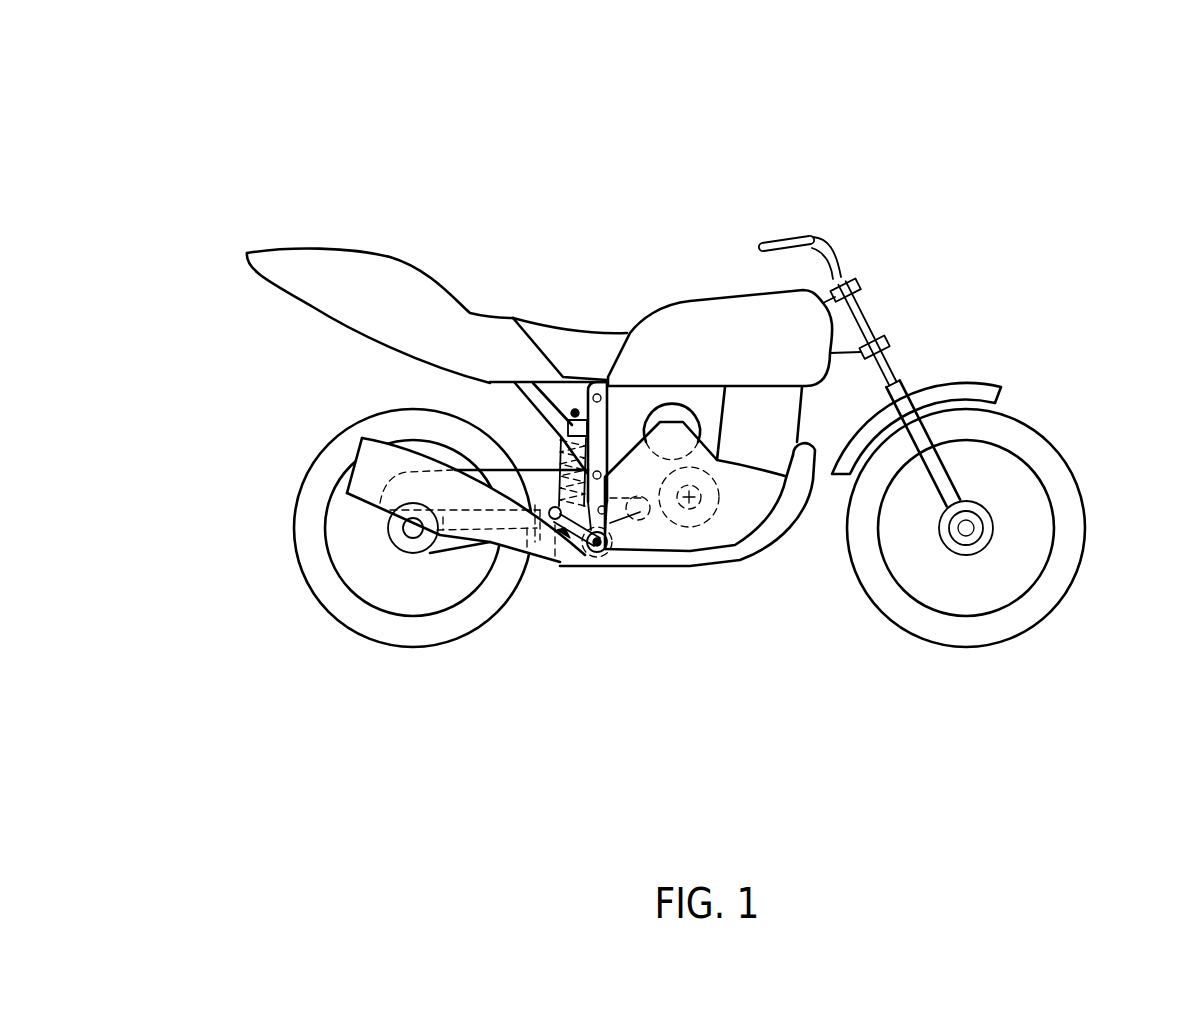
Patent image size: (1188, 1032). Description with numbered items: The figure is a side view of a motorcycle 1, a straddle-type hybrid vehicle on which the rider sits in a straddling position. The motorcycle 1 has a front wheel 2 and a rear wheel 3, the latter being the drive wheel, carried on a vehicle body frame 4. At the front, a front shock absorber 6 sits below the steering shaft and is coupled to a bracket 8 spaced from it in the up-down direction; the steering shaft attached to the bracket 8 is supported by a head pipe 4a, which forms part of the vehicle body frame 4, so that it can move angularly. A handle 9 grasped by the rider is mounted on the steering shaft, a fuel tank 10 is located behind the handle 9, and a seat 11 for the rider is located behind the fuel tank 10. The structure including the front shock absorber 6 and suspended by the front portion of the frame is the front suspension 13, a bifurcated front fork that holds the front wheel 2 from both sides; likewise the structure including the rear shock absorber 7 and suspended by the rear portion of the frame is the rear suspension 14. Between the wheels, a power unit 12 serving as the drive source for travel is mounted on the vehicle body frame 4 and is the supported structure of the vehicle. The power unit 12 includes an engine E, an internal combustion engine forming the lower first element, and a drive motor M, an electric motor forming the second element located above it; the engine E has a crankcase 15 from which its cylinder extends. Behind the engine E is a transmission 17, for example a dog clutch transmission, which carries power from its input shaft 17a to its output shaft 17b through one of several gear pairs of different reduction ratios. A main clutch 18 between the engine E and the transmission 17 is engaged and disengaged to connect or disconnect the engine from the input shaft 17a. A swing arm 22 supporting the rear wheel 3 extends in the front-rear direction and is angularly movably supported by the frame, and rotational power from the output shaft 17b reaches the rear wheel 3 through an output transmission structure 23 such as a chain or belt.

The motorcycle 1 is at (948, 183).
The front wheel 2 is at (1083, 503).
The rear wheel 3 is at (298, 531).
The vehicle body frame 4 is at (548, 405).
The head pipe 4a is at (857, 303).
The front shock absorber 6 is at (933, 482).
The rear shock absorber 7 is at (560, 470).
The bracket 8 is at (892, 338).
The handle 9 is at (768, 242).
The fuel tank 10 is at (700, 308).
The seat 11 is at (580, 333).
The power unit 12 is at (762, 445).
The front suspension 13 is at (938, 349).
The rear suspension 14 is at (580, 600).
The crankcase 15 is at (742, 530).
The transmission 17 is at (653, 533).
The input shaft 17a is at (690, 543).
The output shaft 17b is at (633, 540).
The main clutch 18 is at (668, 550).
The swing arm 22 is at (533, 537).
The output transmission structure 23 is at (507, 543).
The drive motor M is at (672, 410).
The engine E is at (765, 497).